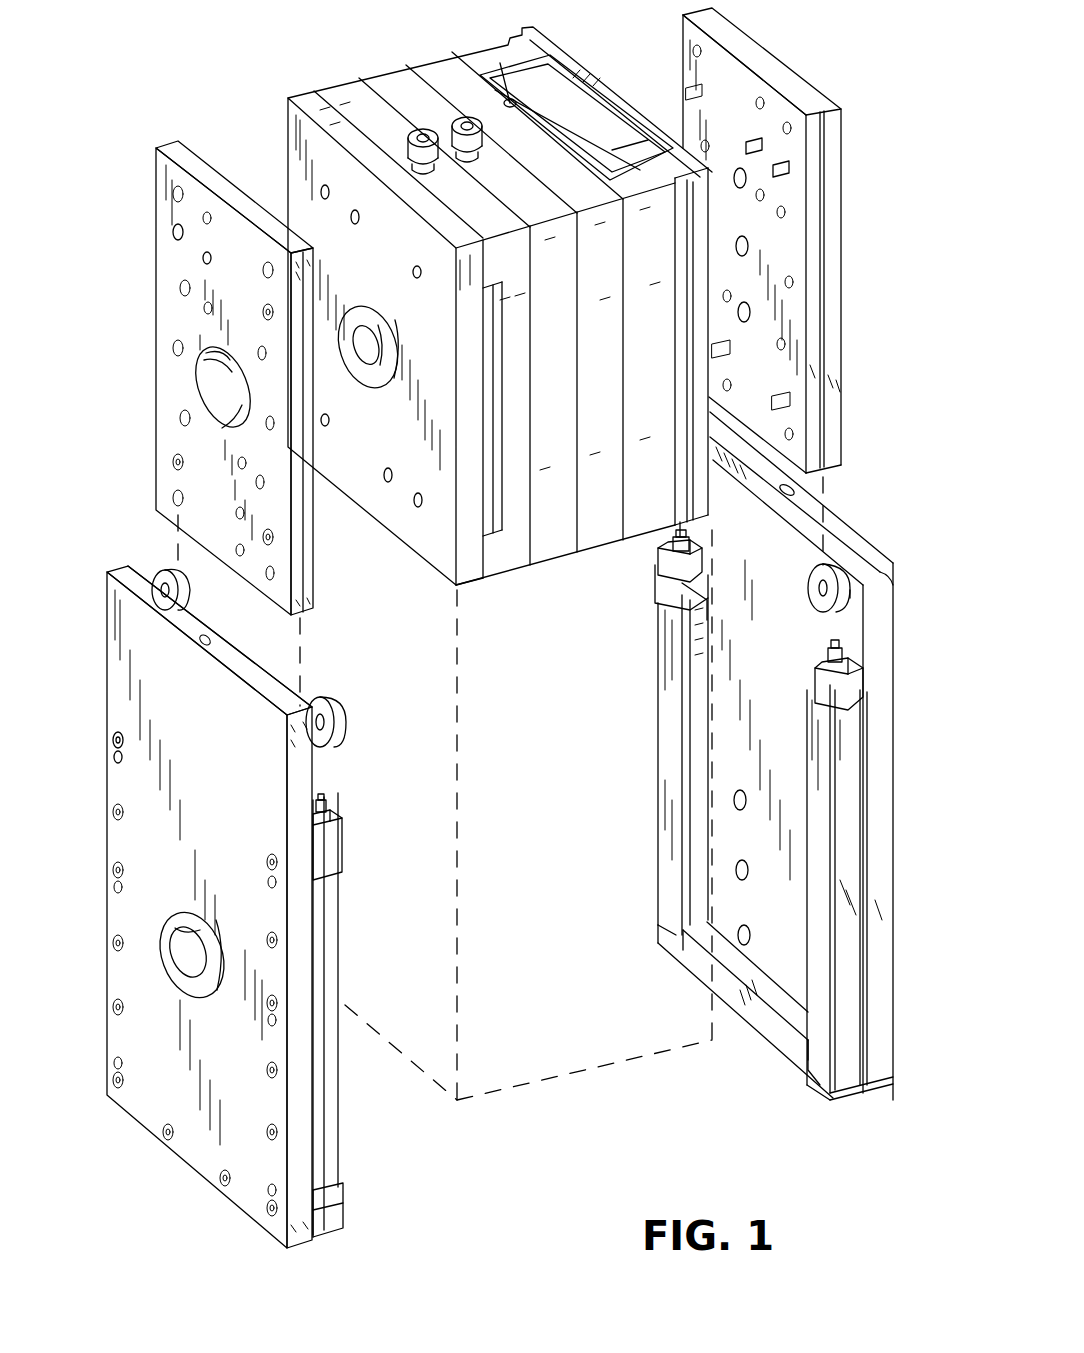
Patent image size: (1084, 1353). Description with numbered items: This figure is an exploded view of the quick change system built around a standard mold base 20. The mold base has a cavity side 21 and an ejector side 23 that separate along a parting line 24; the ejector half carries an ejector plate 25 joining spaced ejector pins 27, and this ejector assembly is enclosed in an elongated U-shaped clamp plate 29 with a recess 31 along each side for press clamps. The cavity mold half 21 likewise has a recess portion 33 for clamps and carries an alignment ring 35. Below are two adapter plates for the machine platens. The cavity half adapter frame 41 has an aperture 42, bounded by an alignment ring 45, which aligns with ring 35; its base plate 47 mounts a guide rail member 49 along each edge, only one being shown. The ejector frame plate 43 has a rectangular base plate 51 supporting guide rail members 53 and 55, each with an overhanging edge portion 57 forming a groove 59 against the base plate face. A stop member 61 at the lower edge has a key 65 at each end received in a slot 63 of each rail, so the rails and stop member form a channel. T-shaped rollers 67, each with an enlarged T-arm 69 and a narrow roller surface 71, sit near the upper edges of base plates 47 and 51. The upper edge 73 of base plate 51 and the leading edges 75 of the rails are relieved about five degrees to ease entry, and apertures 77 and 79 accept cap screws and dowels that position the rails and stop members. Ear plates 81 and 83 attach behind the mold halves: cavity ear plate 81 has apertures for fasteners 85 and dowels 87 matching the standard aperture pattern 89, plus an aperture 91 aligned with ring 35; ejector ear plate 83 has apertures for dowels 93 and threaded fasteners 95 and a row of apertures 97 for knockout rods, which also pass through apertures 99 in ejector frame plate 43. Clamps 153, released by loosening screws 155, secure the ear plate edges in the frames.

The mold base 20 is at (455, 630).
The cavity side 21 is at (502, 312).
The ejector side 23 is at (460, 118).
The parting line 24 is at (528, 562).
The ejector plate 25 is at (420, 78).
The ejector pins 27 is at (500, 85).
The clamp plate 29 is at (664, 377).
The recess 31 is at (508, 45).
The recess portion 33 is at (488, 533).
The alignment ring 35 is at (372, 318).
The cavity half adapter frame 41 is at (225, 907).
The aperture 42 is at (195, 962).
The ejector frame plate 43 is at (771, 762).
The alignment ring 45 is at (198, 922).
The base plate 47 is at (275, 705).
The guide rail member 49 is at (340, 1212).
The base plate 51 is at (833, 523).
The guide rail member 53 is at (668, 688).
The guide rail member 55 is at (865, 800).
The overhanging edge portion 57 is at (690, 725).
The groove 59 is at (702, 690).
The stop member 61 is at (745, 1010).
The slot 63 is at (668, 930).
The key 65 is at (680, 978).
The T-shaped rollers 67 is at (195, 585).
The T-arm 69 is at (822, 612).
The roller surface 71 is at (870, 552).
The upper edge 73 is at (890, 575).
The leading edges 75 is at (690, 585).
The apertures 77 is at (112, 742).
The apertures 79 is at (114, 760).
The ear plate 81 is at (206, 359).
The ear plate 83 is at (779, 240).
The fasteners 85 is at (174, 232).
The dowels 87 is at (205, 260).
The standard aperture pattern 89 is at (326, 196).
The aperture 91 is at (215, 378).
The dowels 93 is at (750, 142).
The threaded fasteners 95 is at (785, 168).
The apertures 97 is at (740, 310).
The apertures 99 is at (740, 865).
The clamps 153 is at (332, 822).
The screws 155 is at (324, 798).